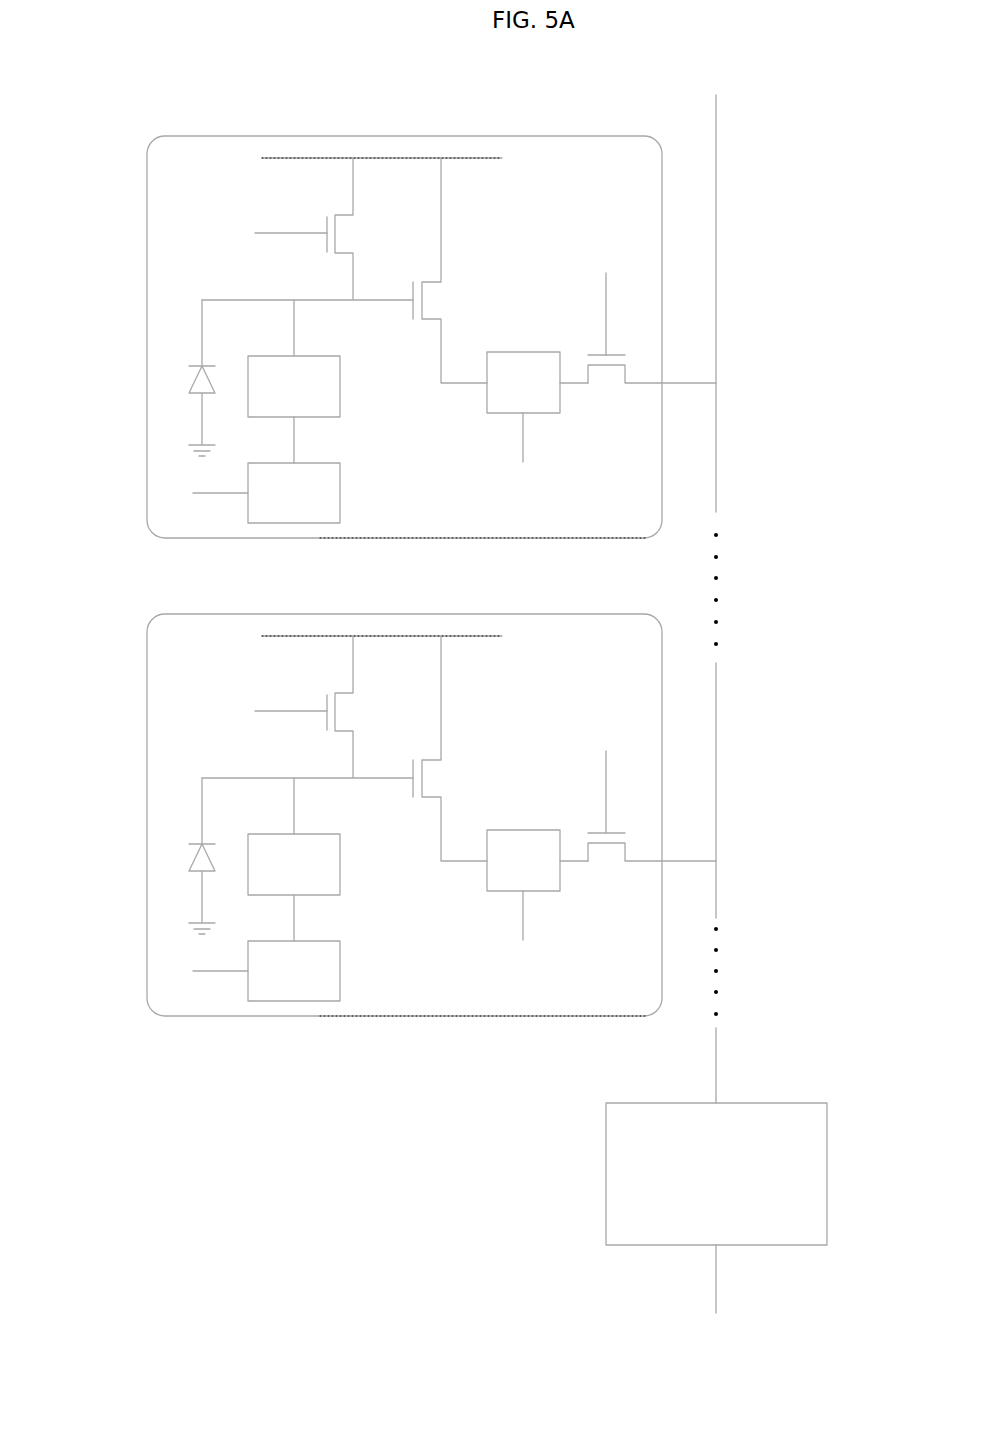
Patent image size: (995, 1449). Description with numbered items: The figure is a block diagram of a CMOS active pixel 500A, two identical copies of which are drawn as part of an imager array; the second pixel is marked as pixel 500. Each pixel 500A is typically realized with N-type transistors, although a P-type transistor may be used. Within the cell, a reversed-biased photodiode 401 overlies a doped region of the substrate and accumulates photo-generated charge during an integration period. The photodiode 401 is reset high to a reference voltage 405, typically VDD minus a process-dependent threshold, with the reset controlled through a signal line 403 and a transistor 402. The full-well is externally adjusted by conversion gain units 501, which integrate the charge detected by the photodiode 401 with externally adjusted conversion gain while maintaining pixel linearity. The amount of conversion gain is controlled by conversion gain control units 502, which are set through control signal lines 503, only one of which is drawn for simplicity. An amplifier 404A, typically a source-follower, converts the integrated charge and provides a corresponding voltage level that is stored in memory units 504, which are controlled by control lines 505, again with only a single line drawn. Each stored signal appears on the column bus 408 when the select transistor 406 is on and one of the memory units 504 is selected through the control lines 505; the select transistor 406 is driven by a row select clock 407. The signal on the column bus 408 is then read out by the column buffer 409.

The photodiode 401 is at (186, 617).
The transistor 402 is at (307, 468).
The signal line 403 is at (272, 472).
The amplifier 404A is at (450, 509).
The reference voltage 405 is at (365, 396).
The select transistor 406 is at (652, 612).
The row select clock 407 is at (608, 540).
The column bus 408 is at (726, 692).
The column buffer 409 is at (716, 1174).
The pixel 500 is at (147, 814).
The CMOS active pixel 500A is at (405, 136).
The conversion gain units 501 is at (294, 620).
The conversion gain control units 502 is at (294, 732).
The control signal lines 503 is at (205, 731).
The memory units 504 is at (537, 621).
The control lines 505 is at (525, 687).